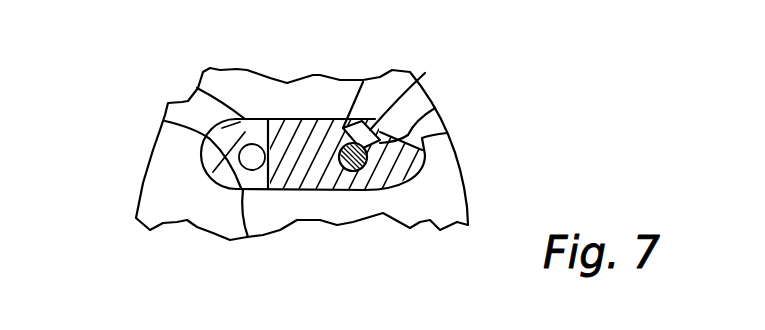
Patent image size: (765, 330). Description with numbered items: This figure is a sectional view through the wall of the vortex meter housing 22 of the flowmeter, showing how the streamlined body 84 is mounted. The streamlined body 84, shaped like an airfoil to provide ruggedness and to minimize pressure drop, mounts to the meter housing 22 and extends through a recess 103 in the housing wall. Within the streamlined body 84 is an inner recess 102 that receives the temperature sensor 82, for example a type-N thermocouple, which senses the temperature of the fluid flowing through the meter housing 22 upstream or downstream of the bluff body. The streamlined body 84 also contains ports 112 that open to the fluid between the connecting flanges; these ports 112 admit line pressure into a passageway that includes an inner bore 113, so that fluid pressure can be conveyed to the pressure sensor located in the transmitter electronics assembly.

The meter housing 22 is at (454, 195).
The temperature sensor 82 is at (364, 82).
The streamlined body 84 is at (430, 107).
The inner recess 102 is at (425, 73).
The recess 103 is at (430, 134).
The port 112 is at (197, 88).
The inner bore 113 is at (165, 121).